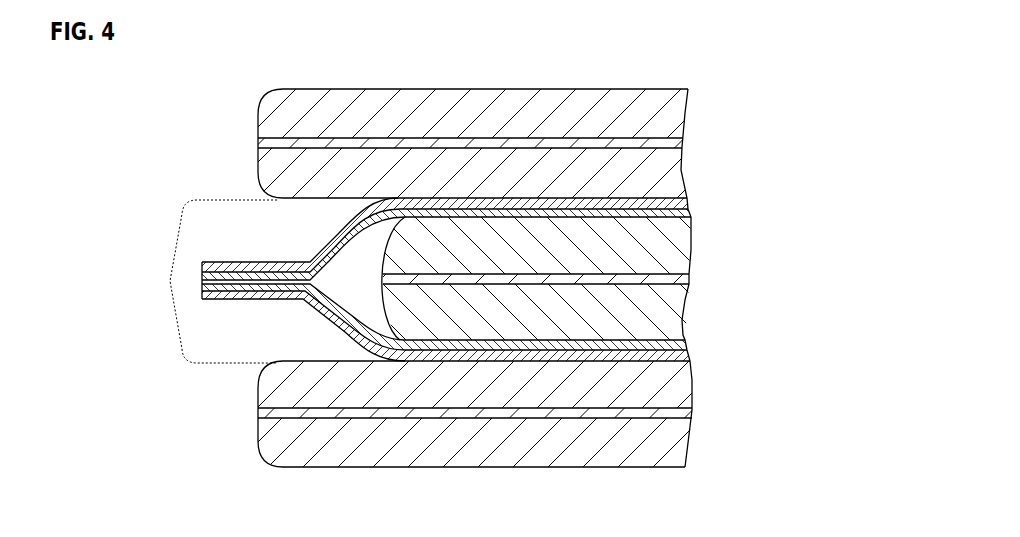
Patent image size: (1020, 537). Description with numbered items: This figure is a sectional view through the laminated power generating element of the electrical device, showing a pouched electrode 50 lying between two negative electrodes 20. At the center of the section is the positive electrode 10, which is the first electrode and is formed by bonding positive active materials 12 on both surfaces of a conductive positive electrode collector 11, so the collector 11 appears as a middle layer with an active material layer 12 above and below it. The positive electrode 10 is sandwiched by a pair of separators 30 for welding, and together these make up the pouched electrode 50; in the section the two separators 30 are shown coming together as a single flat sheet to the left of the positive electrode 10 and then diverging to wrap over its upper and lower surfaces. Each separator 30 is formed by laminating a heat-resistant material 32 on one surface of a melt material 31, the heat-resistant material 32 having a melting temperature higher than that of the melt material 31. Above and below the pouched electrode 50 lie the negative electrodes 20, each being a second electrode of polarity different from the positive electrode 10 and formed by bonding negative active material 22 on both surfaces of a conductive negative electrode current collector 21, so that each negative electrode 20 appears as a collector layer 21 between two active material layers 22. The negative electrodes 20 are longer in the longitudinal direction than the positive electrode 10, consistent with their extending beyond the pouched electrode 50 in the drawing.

The positive electrode 10 is at (582, 274).
The positive electrode collector 11 is at (691, 276).
The positive active materials 12 is at (692, 240).
The negative electrode 20 is at (428, 285).
The negative electrode current collector 21 is at (456, 281).
The negative active material 22 is at (262, 112).
The separator 30 is at (446, 280).
The melt material 31 is at (325, 250).
The heat-resistant material 32 is at (314, 263).
The pouched electrode 50 is at (210, 281).